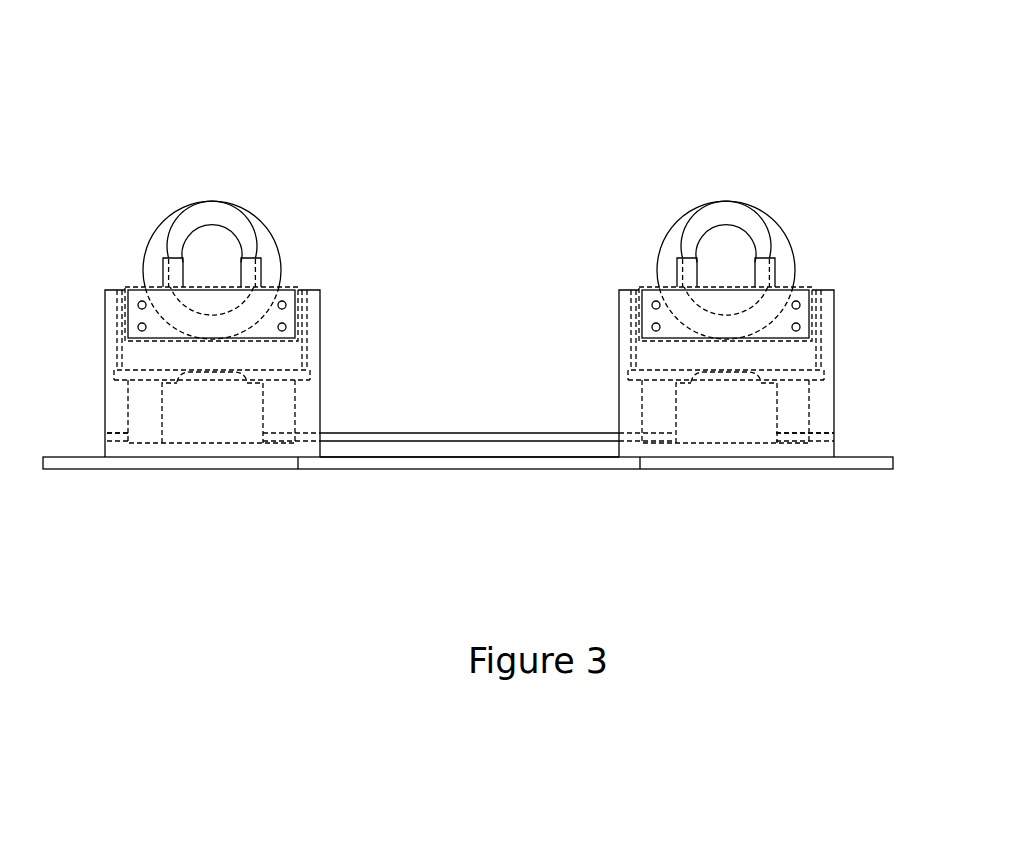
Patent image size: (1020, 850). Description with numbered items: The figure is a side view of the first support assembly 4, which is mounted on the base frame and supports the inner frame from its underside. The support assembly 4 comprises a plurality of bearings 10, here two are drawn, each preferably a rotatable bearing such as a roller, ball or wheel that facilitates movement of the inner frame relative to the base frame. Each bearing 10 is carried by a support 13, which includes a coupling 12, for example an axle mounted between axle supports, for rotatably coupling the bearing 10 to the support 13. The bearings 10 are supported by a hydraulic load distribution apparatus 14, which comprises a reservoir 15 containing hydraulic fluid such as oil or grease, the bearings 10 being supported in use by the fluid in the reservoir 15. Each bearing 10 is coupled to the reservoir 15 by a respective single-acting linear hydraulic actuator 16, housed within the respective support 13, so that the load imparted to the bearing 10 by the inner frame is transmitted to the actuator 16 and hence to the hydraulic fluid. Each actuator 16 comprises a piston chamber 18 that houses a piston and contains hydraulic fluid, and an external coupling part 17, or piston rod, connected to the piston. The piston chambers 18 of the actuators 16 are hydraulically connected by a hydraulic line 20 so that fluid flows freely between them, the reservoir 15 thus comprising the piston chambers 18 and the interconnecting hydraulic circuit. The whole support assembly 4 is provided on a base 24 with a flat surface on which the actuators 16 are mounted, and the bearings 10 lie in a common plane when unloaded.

The first support assembly 4 is at (574, 110).
The bearing 10 is at (240, 220).
The coupling 12 is at (288, 315).
The support 13 is at (104, 301).
The hydraulic load distribution apparatus 14 is at (548, 420).
The reservoir 15 is at (347, 433).
The hydraulic actuator 16 is at (122, 412).
The external coupling part 17 is at (220, 370).
The piston chamber 18 is at (249, 410).
The hydraulic line 20 is at (453, 433).
The base 24 is at (858, 456).